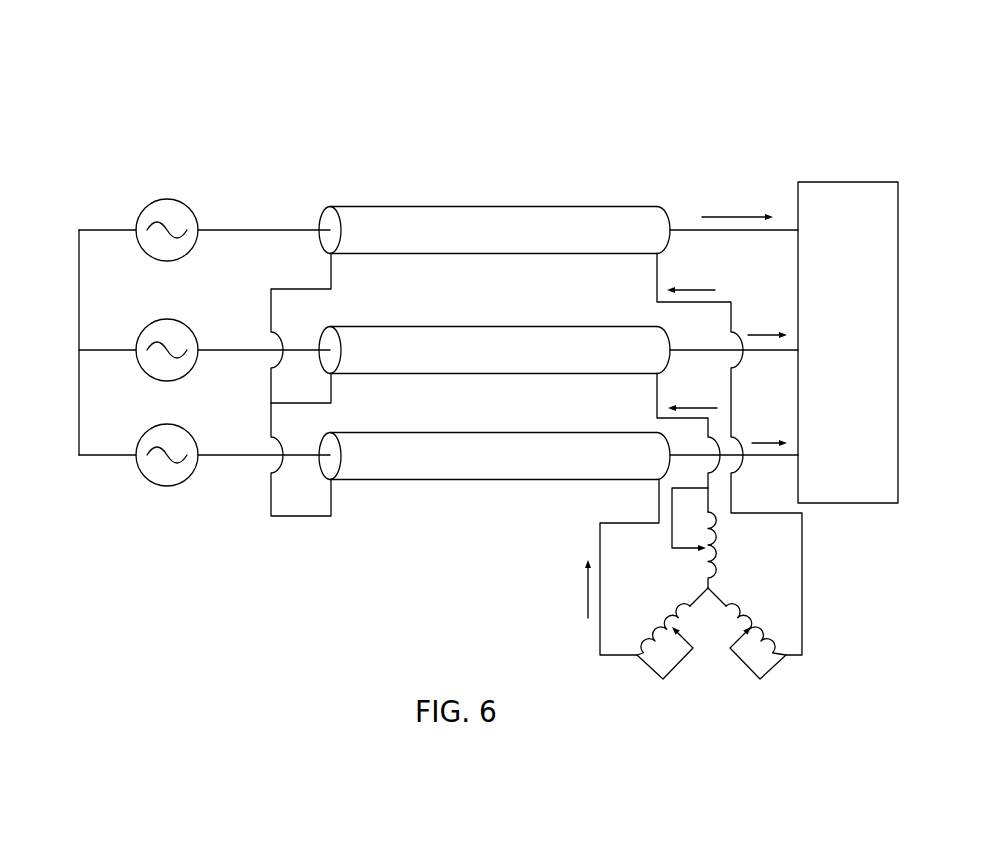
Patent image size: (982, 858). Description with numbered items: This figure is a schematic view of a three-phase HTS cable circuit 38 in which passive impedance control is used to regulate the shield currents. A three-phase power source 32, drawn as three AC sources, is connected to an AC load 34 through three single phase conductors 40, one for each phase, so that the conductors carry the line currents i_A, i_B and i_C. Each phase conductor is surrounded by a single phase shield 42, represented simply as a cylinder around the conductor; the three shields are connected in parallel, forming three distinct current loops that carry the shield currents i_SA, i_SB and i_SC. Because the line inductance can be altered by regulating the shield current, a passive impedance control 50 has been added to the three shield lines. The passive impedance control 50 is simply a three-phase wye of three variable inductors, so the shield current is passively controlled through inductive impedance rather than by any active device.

The 3-phase power source 32 is at (79, 292).
The AC load 34 is at (843, 182).
The power distribution system 38 is at (459, 124).
The single phase conductor 40 is at (255, 230).
The single phase shield 42 is at (509, 207).
The passive impedance control 50 is at (529, 571).